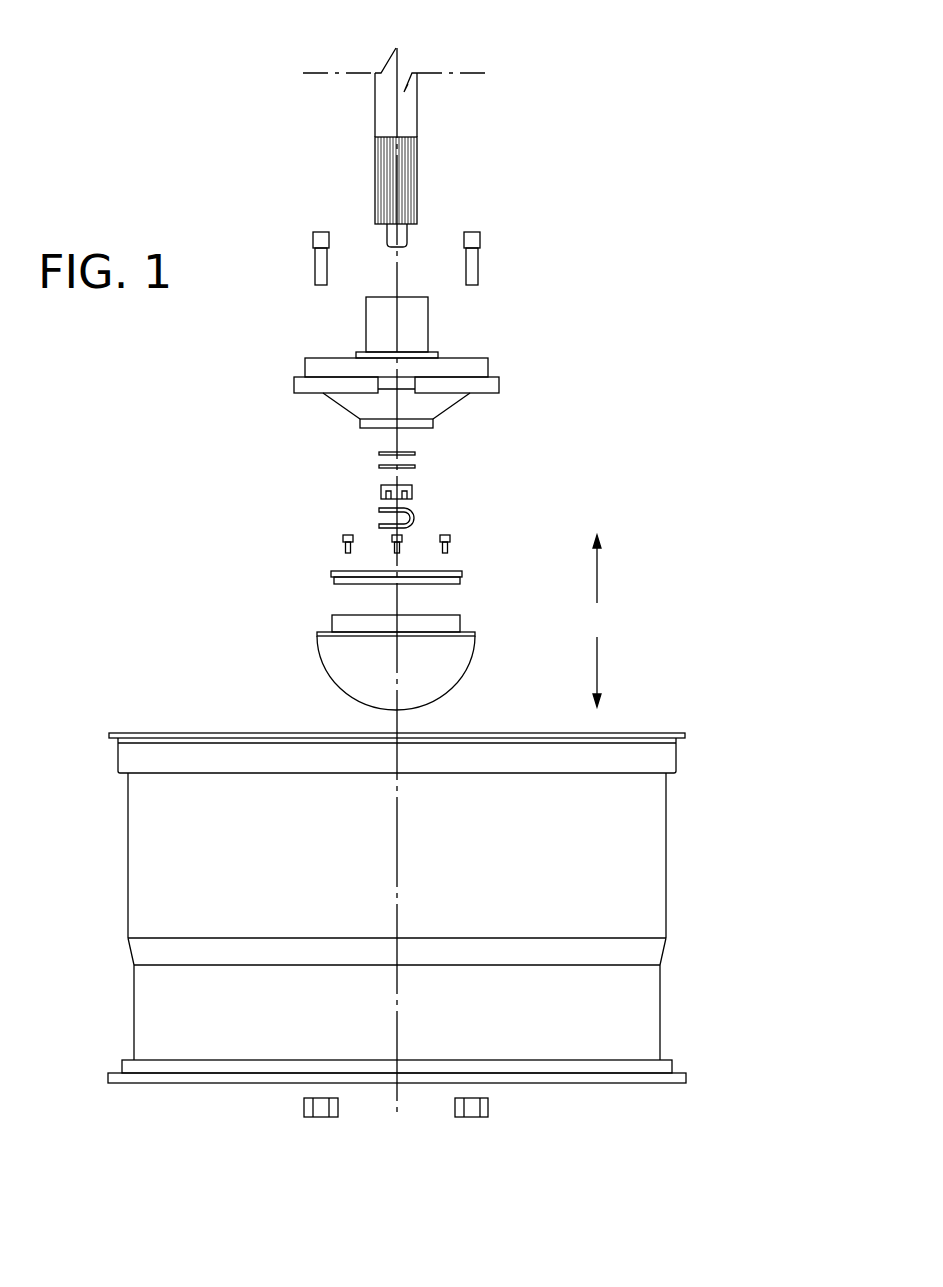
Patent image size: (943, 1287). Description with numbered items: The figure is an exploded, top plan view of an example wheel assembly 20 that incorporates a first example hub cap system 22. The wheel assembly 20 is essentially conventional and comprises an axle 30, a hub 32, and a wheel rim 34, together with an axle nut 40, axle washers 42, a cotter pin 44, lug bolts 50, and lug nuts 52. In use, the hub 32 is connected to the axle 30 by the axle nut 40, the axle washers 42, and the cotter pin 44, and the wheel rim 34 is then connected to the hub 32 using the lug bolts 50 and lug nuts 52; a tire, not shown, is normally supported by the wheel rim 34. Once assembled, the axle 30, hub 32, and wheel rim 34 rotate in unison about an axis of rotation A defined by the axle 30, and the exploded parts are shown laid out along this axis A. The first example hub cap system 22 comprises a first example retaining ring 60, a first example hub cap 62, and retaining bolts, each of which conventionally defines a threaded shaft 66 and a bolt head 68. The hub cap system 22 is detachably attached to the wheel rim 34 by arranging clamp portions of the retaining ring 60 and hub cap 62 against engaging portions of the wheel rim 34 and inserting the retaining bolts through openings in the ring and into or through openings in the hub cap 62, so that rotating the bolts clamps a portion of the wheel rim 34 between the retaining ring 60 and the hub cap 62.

The wheel assembly 20 is at (615, 80).
The hub cap system 22 is at (598, 621).
The axle 30 is at (408, 123).
The hub 32 is at (475, 365).
The wheel rim 34 is at (653, 837).
The axle nut 40 is at (412, 490).
The axle washers 42 is at (415, 467).
The cotter pin 44 is at (380, 510).
The lug bolts 50 is at (320, 268).
The lug nuts 52 is at (320, 1106).
The retaining ring 60 is at (462, 572).
The hub cap 62 is at (473, 653).
The threaded shaft 66 is at (343, 548).
The bolt head 68 is at (343, 538).
The axis of rotation A is at (397, 727).